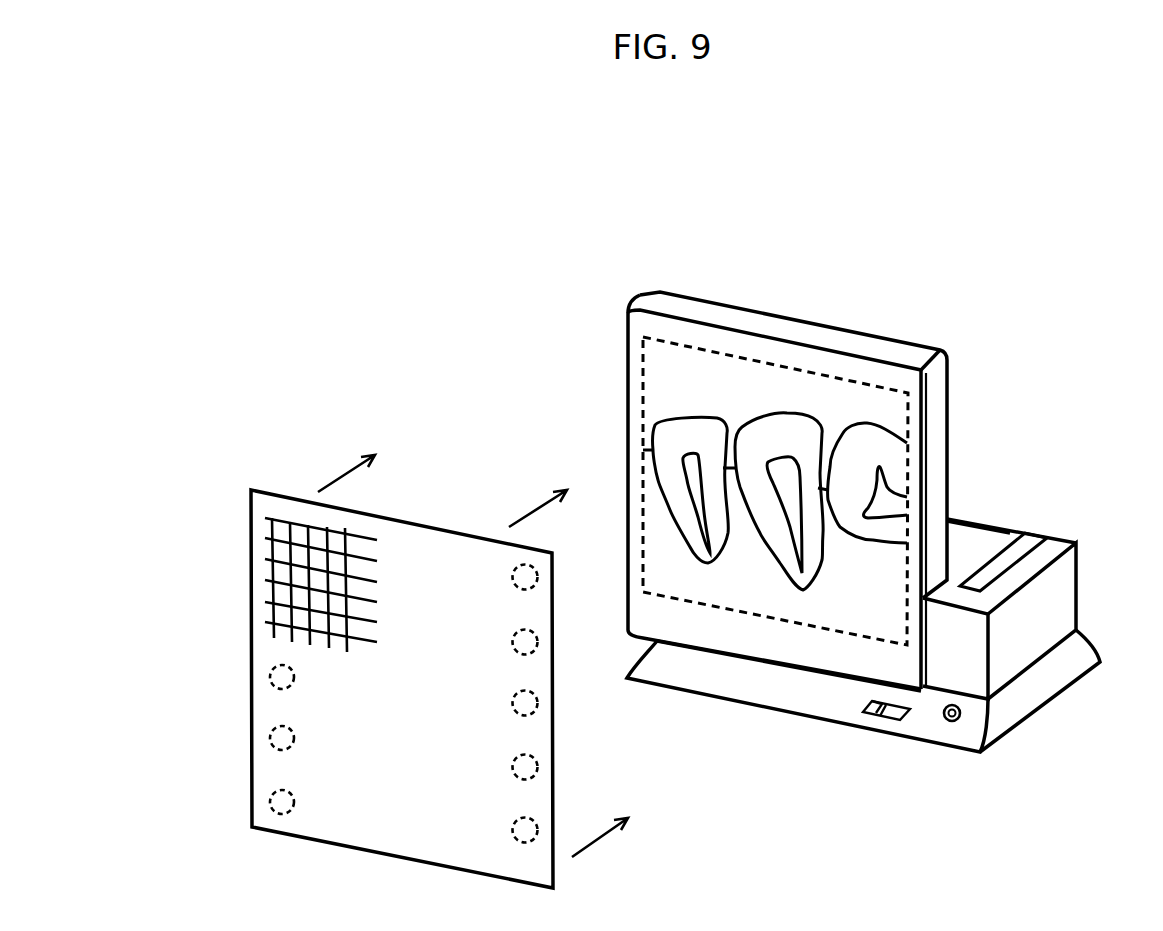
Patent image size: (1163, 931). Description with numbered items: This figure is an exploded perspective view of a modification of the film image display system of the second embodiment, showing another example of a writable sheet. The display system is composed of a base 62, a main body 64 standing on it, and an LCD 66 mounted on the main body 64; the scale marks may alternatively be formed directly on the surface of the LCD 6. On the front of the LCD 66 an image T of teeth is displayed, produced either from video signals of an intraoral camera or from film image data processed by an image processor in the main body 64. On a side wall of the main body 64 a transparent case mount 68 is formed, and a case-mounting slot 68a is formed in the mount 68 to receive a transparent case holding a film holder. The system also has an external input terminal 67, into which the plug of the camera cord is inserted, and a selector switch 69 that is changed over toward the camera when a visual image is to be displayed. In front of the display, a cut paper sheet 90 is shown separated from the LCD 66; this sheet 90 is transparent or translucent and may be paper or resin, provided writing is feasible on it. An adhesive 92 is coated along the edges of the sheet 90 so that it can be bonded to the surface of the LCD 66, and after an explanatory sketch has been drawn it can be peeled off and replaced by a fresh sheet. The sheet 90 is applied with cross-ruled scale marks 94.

The LCD 6 is at (836, 264).
The base 62 is at (772, 693).
The main body 64 is at (978, 537).
The LCD 66 is at (933, 415).
The external input terminal 67 is at (943, 720).
The transparent case mount 68 is at (1035, 638).
The case-mounting slot 68a is at (1000, 560).
The selector switch 69 is at (867, 713).
The cut paper sheet 90 is at (382, 840).
The adhesive 92 is at (270, 677).
The cross-ruled scale marks 94 is at (265, 584).
The image of teeth T is at (695, 418).